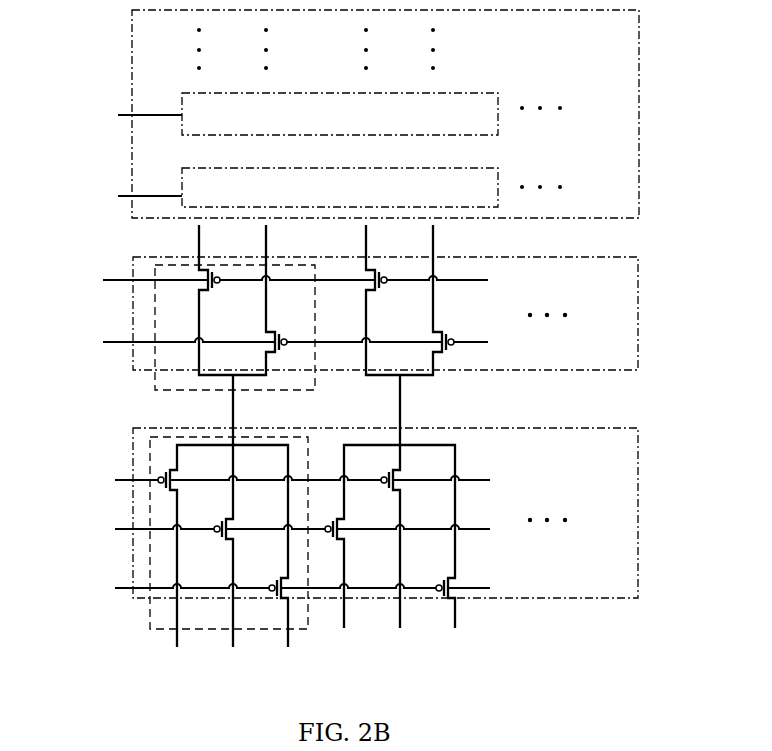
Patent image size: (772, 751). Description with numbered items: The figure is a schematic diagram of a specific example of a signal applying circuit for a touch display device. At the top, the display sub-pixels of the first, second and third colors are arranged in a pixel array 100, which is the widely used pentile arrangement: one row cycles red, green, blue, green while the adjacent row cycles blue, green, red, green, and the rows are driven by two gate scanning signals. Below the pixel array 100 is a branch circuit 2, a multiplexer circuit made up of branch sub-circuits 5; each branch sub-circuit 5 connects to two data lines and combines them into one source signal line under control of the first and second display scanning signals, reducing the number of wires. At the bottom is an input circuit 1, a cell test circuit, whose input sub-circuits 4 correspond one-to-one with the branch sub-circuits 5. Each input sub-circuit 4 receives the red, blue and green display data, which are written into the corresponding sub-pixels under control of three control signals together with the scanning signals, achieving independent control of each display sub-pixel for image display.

The pixel array 100 is at (339, 114).
The branch circuit 2 is at (340, 335).
The branch sub-circuit 5 is at (235, 327).
The input circuit 1 is at (330, 548).
The input sub-circuit 4 is at (229, 535).